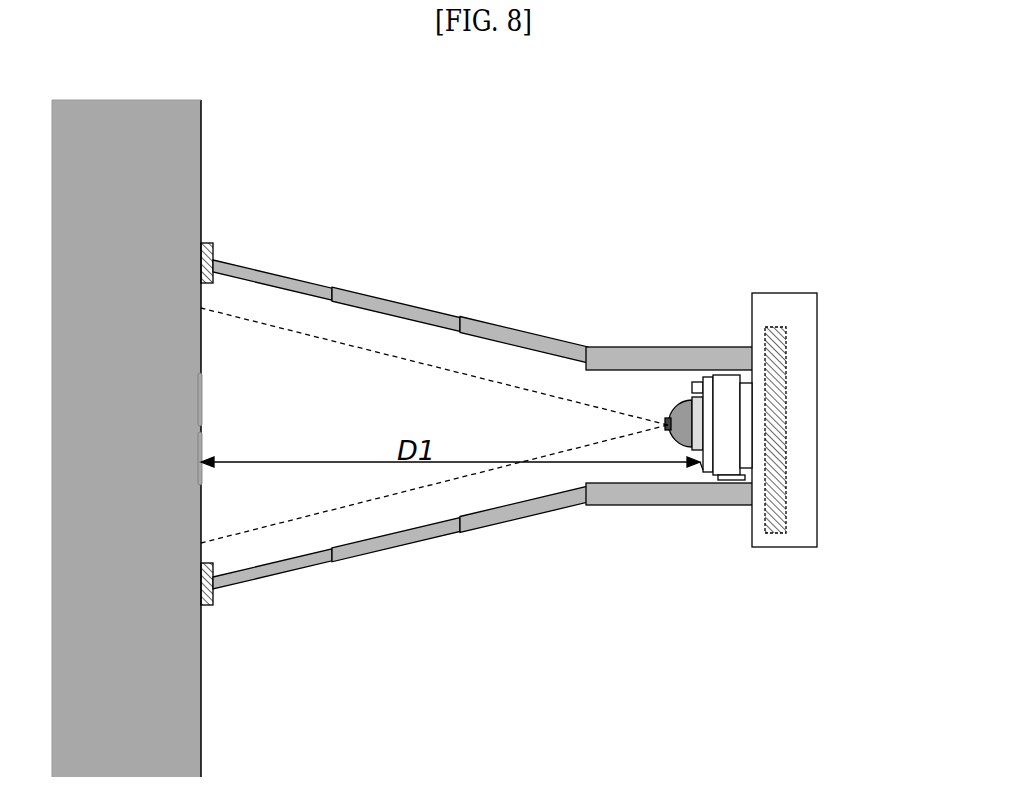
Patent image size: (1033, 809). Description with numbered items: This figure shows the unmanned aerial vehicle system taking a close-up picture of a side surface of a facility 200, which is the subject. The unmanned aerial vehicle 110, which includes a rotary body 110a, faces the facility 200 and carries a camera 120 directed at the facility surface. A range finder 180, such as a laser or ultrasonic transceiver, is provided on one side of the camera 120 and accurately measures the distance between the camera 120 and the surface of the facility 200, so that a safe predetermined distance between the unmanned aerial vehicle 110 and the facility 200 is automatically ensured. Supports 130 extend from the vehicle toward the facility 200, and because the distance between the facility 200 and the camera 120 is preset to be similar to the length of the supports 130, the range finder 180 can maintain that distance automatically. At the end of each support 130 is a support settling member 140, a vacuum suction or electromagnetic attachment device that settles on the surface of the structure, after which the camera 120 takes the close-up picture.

The facility 200 is at (185, 172).
The unmanned aerial vehicle 110 is at (800, 350).
The rotary body 110a is at (780, 435).
The camera 120 is at (682, 446).
The supports 130 is at (427, 532).
The support settling members 140 is at (210, 605).
The range finder 180 is at (700, 468).